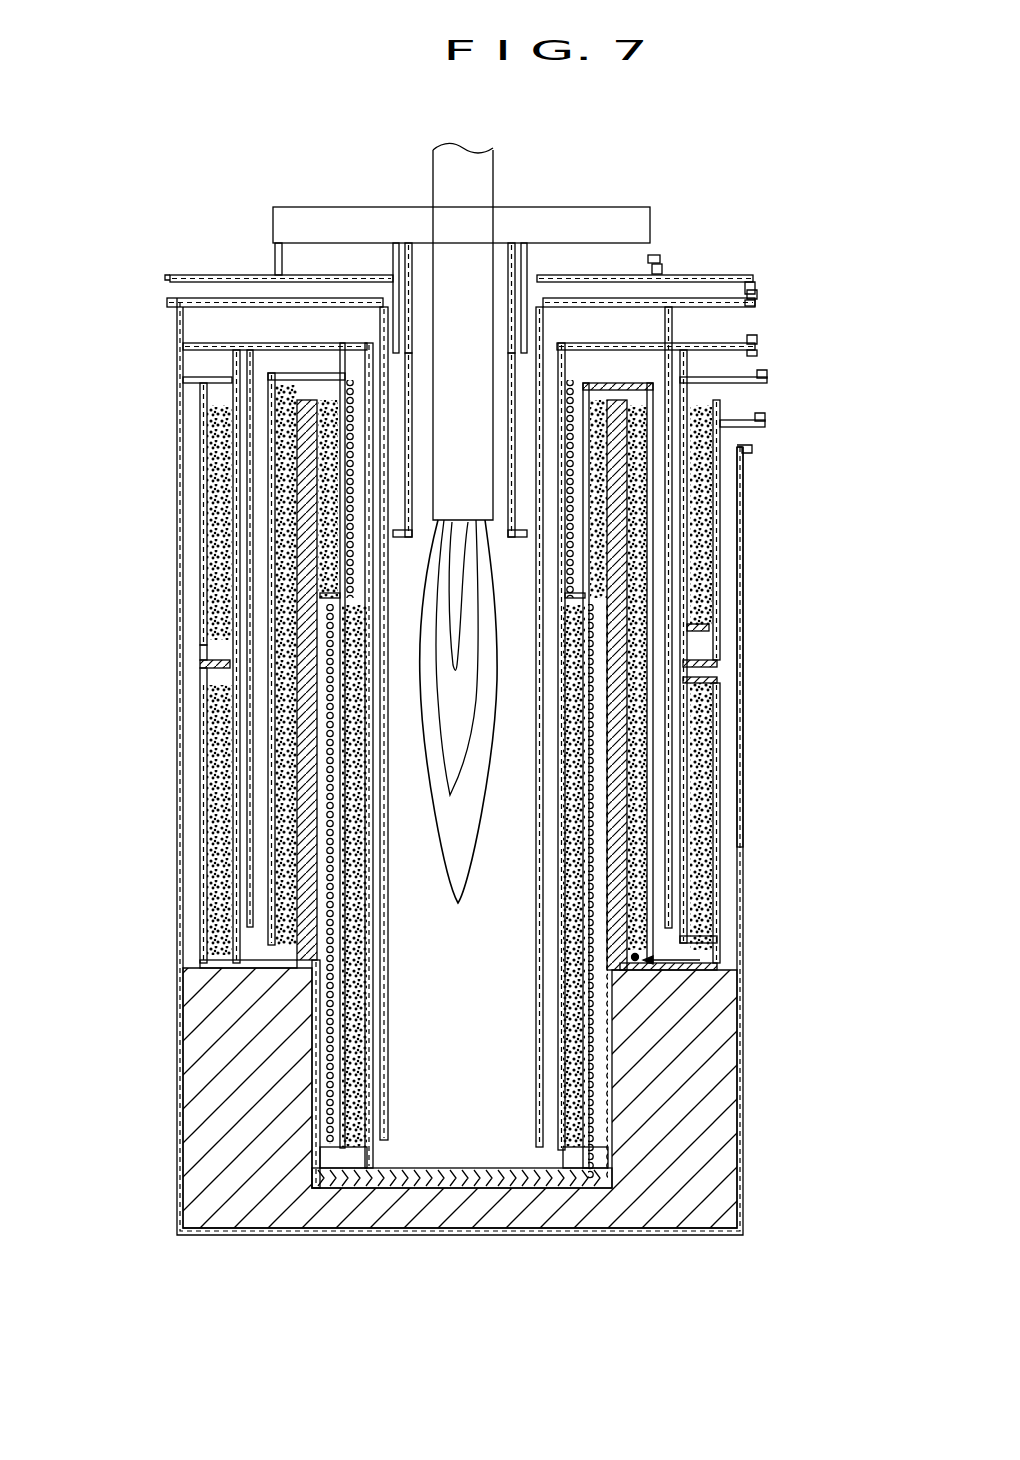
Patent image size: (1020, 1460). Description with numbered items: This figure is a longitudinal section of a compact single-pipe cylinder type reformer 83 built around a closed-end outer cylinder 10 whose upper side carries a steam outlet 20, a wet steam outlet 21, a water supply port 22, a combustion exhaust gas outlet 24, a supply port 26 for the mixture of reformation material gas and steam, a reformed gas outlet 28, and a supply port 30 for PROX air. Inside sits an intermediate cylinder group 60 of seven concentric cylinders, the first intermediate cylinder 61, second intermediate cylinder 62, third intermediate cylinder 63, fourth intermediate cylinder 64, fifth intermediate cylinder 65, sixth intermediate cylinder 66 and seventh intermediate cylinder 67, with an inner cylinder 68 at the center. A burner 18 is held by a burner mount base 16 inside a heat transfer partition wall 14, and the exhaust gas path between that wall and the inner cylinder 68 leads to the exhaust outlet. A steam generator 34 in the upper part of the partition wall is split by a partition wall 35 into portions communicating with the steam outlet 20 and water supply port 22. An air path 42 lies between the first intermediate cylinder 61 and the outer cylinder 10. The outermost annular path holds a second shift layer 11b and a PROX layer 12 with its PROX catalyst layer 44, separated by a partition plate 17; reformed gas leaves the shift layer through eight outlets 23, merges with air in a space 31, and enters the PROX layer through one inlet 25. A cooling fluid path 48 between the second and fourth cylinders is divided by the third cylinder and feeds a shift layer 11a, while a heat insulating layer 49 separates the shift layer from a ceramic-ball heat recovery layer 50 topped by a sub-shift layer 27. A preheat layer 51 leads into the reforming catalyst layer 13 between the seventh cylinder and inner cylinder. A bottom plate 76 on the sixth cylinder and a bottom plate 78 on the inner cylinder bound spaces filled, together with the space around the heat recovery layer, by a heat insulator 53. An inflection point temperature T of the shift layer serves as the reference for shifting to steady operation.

The outer cylinder 10 is at (178, 562).
The shift layer 11a is at (640, 706).
The second shift layer 11b is at (716, 727).
The PROX layer 12 is at (199, 603).
The reforming catalyst layer 13 is at (566, 1150).
The heat transfer partition wall 14 is at (395, 1135).
The burner mount base 16 is at (620, 228).
The partition plate 17 is at (702, 658).
The burner 18 is at (490, 193).
The steam outlet 20 is at (660, 268).
The wet steam outlet 21 is at (180, 288).
The water supply port 22 is at (752, 296).
The outlets 23 is at (712, 681).
The combustion exhaust gas outlet 24 is at (752, 334).
The inlet 25 is at (200, 658).
The supply port for fluid mixture of reformation material gas and steam 26 is at (752, 369).
The sub-shift layer 27 is at (595, 478).
The reformed gas outlet 28 is at (756, 409).
The supply port for PROX layer air 30 is at (755, 446).
The space 31 is at (731, 840).
The steam generator 34 is at (402, 462).
The partition wall 35 is at (410, 322).
The air path 42 is at (723, 506).
The PROX catalyst layer 44 is at (696, 597).
The cooling fluid path 48 is at (700, 768).
The heat insulating layer 49 is at (620, 850).
The heat recovery layer 50 is at (650, 905).
The preheat layer 51 is at (588, 530).
The heat insulator 53 is at (722, 1080).
The intermediate cylinder group 60 is at (193, 747).
The first intermediate cylinder 61 is at (203, 697).
The second intermediate cylinder 62 is at (222, 744).
The third intermediate cylinder 63 is at (248, 783).
The fourth intermediate cylinder 64 is at (270, 836).
The fifth intermediate cylinder 65 is at (300, 887).
The sixth intermediate cylinder 66 is at (315, 915).
The seventh intermediate cylinder 67 is at (337, 972).
The inner cylinder 68 is at (103, 678).
The bottom plate 76 is at (600, 1185).
The bottom plate 78 is at (481, 1178).
The reformer 83 is at (764, 236).
The inflection point temperature T is at (700, 962).